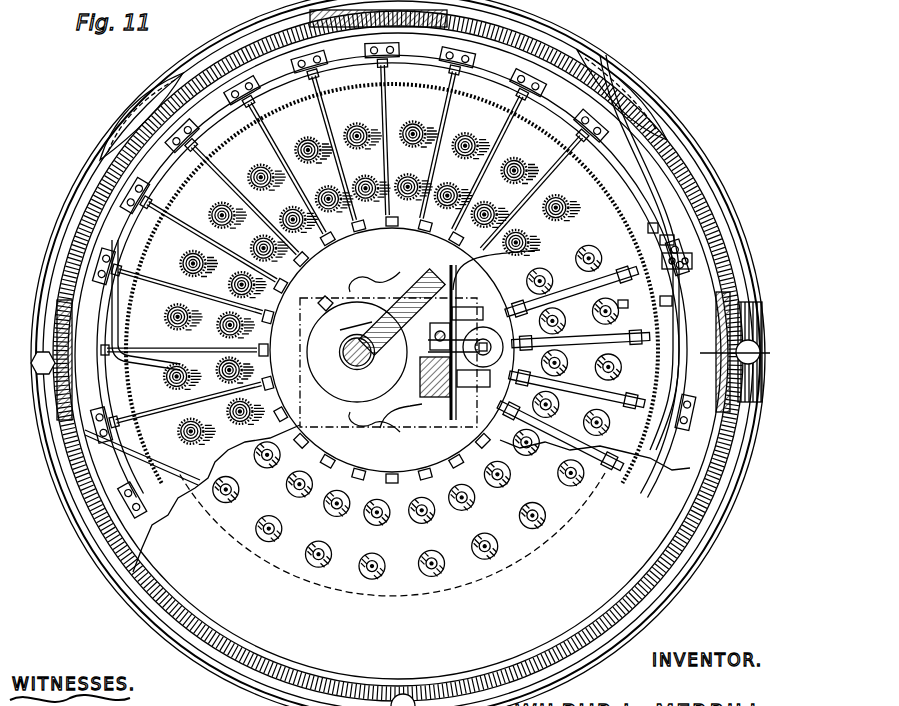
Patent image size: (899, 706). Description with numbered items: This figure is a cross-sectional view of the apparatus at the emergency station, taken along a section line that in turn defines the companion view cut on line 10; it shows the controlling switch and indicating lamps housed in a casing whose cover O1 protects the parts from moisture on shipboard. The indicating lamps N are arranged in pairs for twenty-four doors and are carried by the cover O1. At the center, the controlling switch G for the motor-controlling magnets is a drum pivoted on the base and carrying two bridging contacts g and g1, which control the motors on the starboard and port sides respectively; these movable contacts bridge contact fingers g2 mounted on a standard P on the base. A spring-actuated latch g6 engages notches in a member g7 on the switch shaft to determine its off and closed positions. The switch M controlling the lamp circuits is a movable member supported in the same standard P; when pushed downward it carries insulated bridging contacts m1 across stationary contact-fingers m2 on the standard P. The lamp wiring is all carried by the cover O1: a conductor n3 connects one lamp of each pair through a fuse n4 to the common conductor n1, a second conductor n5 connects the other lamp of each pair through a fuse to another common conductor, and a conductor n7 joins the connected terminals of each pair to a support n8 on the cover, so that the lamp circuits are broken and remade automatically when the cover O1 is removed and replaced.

The section line 10— 10 is at (148, 147).
The indicating lamps N is at (350, 133).
The controlling switch G is at (342, 390).
The bridging contact g is at (324, 300).
The contact fingers g2 is at (352, 285).
The spring-actuated latch g6 is at (397, 300).
The notched member g7 is at (340, 330).
The bridging contact g1 is at (386, 420).
The standard P is at (440, 300).
The lamp-circuit switch member M is at (488, 342).
The stationary contact-fingers m2 is at (490, 303).
The insulated bridging contacts m1 is at (488, 385).
The conductor n3 is at (626, 292).
The fuse n4 is at (652, 228).
The common conductor n1 is at (665, 243).
The support n8 is at (692, 270).
The conductor n7 is at (672, 302).
The conductor n5 is at (628, 306).
The cover O1 is at (392, 534).